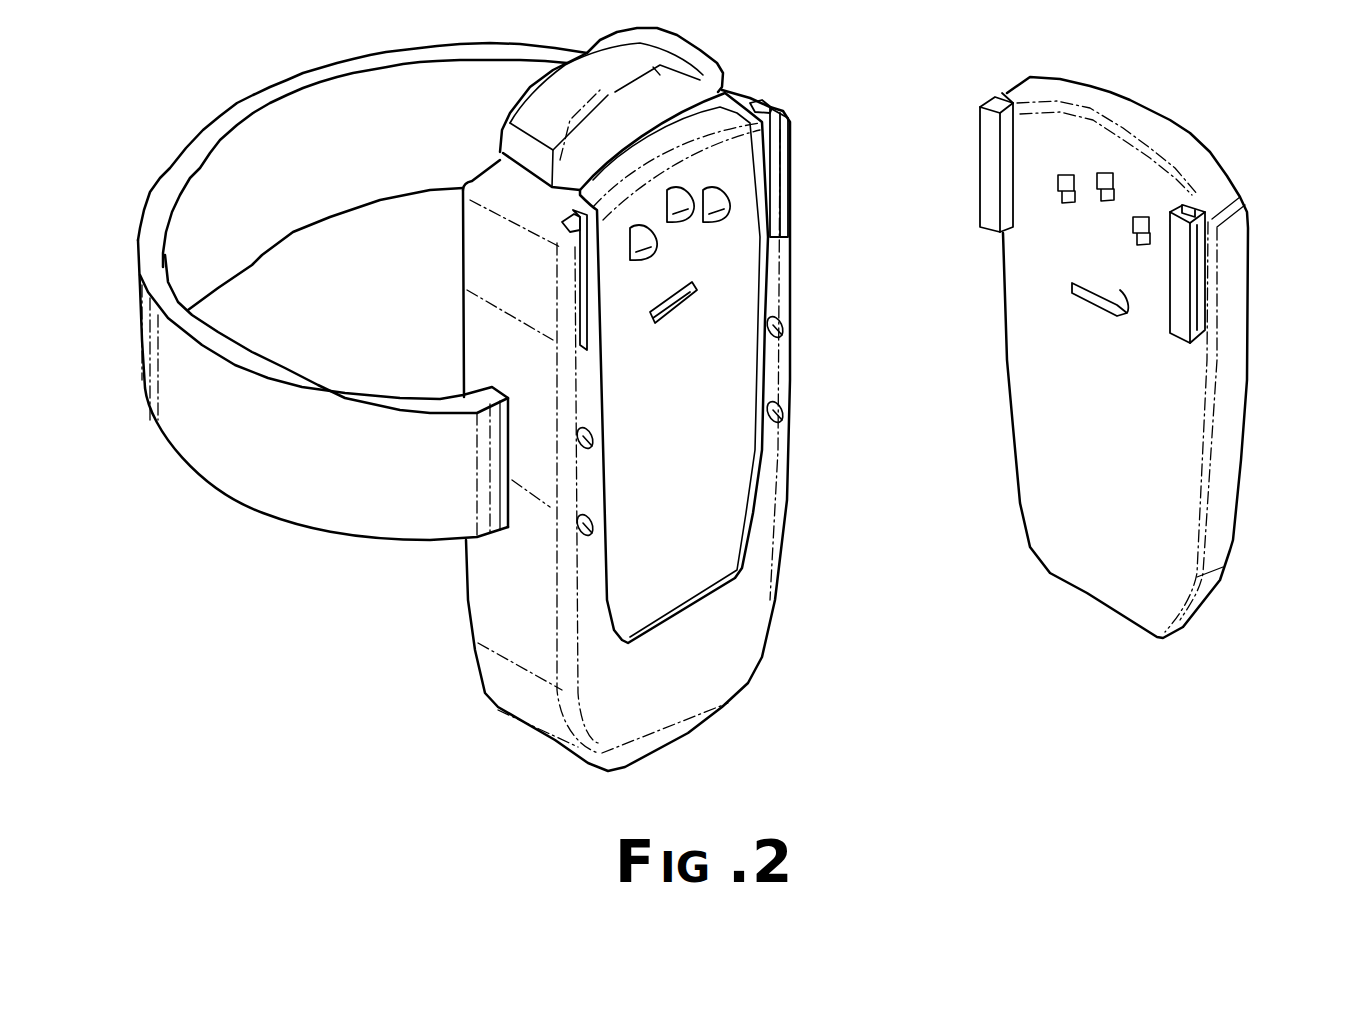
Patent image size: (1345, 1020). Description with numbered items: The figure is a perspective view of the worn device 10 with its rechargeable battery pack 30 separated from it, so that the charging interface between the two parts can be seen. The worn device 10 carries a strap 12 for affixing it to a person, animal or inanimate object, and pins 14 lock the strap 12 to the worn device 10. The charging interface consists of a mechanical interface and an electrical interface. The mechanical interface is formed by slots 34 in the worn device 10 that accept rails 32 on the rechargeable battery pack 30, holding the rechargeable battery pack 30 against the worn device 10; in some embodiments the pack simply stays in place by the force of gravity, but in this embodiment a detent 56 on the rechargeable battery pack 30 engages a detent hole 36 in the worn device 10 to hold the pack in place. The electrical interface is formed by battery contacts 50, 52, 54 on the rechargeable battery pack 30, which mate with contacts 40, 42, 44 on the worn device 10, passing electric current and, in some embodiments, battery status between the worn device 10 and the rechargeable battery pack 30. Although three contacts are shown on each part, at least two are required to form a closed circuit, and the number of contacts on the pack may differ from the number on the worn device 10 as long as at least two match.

The worn device 10 is at (712, 653).
The strap 12 is at (290, 470).
The pins 14 is at (593, 525).
The rechargeable battery pack 30 is at (1113, 550).
The rails 32 is at (990, 140).
The slots 34 is at (573, 213).
The detent hole 36 is at (675, 305).
The contact 40 is at (635, 253).
The contact 42 is at (670, 220).
The contact 44 is at (707, 222).
The battery contact 50 is at (1063, 187).
The battery contact 52 is at (1100, 195).
The battery contact 54 is at (1143, 240).
The detent 56 is at (1123, 307).